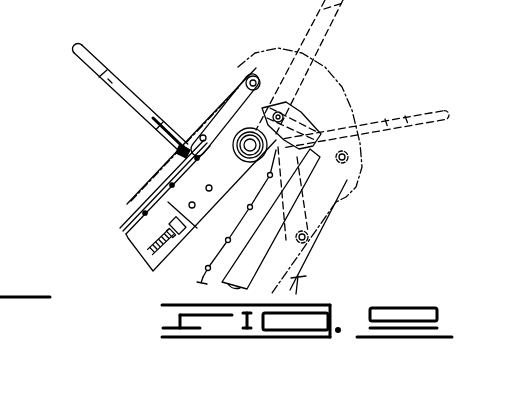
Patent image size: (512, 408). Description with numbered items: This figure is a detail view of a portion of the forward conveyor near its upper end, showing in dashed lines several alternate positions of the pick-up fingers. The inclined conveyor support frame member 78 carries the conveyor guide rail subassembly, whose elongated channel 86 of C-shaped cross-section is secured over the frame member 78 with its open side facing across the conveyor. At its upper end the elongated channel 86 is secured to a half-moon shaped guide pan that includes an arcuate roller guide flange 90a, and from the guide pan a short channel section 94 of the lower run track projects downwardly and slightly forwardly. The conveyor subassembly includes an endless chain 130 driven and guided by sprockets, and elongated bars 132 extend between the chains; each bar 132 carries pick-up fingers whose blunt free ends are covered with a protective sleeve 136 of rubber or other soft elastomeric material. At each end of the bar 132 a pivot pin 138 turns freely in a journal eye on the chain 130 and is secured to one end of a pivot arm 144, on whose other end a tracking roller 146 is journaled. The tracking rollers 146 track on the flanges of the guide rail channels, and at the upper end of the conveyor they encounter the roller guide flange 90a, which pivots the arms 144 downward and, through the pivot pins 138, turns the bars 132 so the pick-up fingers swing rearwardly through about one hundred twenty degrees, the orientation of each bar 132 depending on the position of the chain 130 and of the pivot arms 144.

The inclined conveyor support frame member 78 is at (143, 242).
The elongated channel 86 is at (160, 183).
The roller guide flange 90a is at (349, 187).
The short channel section 94 is at (302, 288).
The endless chain 130 is at (130, 227).
The elongated bar 132 is at (132, 90).
The protective sleeve 136 is at (95, 57).
The pivot pin 138 is at (197, 133).
The pivot arm 144 is at (309, 122).
The tracking roller 146 is at (356, 158).